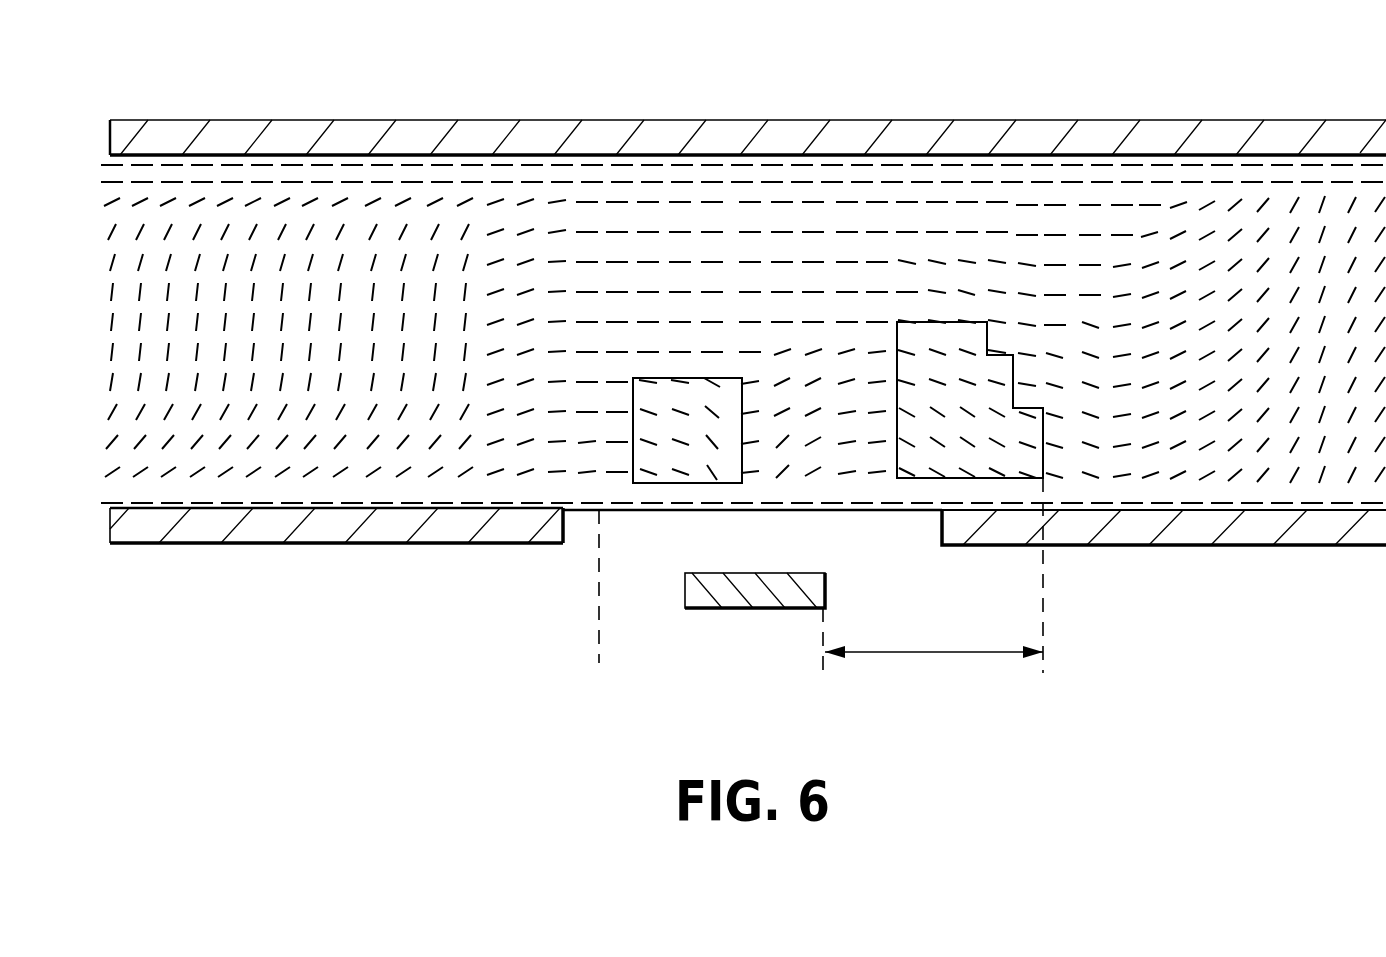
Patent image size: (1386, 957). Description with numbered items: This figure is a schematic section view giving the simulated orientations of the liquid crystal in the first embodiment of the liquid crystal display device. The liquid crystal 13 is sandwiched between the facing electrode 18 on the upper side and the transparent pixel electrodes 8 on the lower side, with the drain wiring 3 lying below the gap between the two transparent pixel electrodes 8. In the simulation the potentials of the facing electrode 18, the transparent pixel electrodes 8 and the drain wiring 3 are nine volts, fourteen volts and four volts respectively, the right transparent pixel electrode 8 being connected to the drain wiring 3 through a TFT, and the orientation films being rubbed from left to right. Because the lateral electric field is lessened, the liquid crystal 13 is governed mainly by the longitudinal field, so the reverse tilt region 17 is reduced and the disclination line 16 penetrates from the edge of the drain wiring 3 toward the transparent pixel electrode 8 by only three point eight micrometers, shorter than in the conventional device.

The facing electrode 18 is at (300, 132).
The liquid crystal 13 is at (463, 233).
The reverse tilt region 17 is at (958, 347).
The transparent pixel electrode 8 is at (390, 528).
The disclination line 16 is at (599, 660).
The drain wiring 3 is at (767, 597).